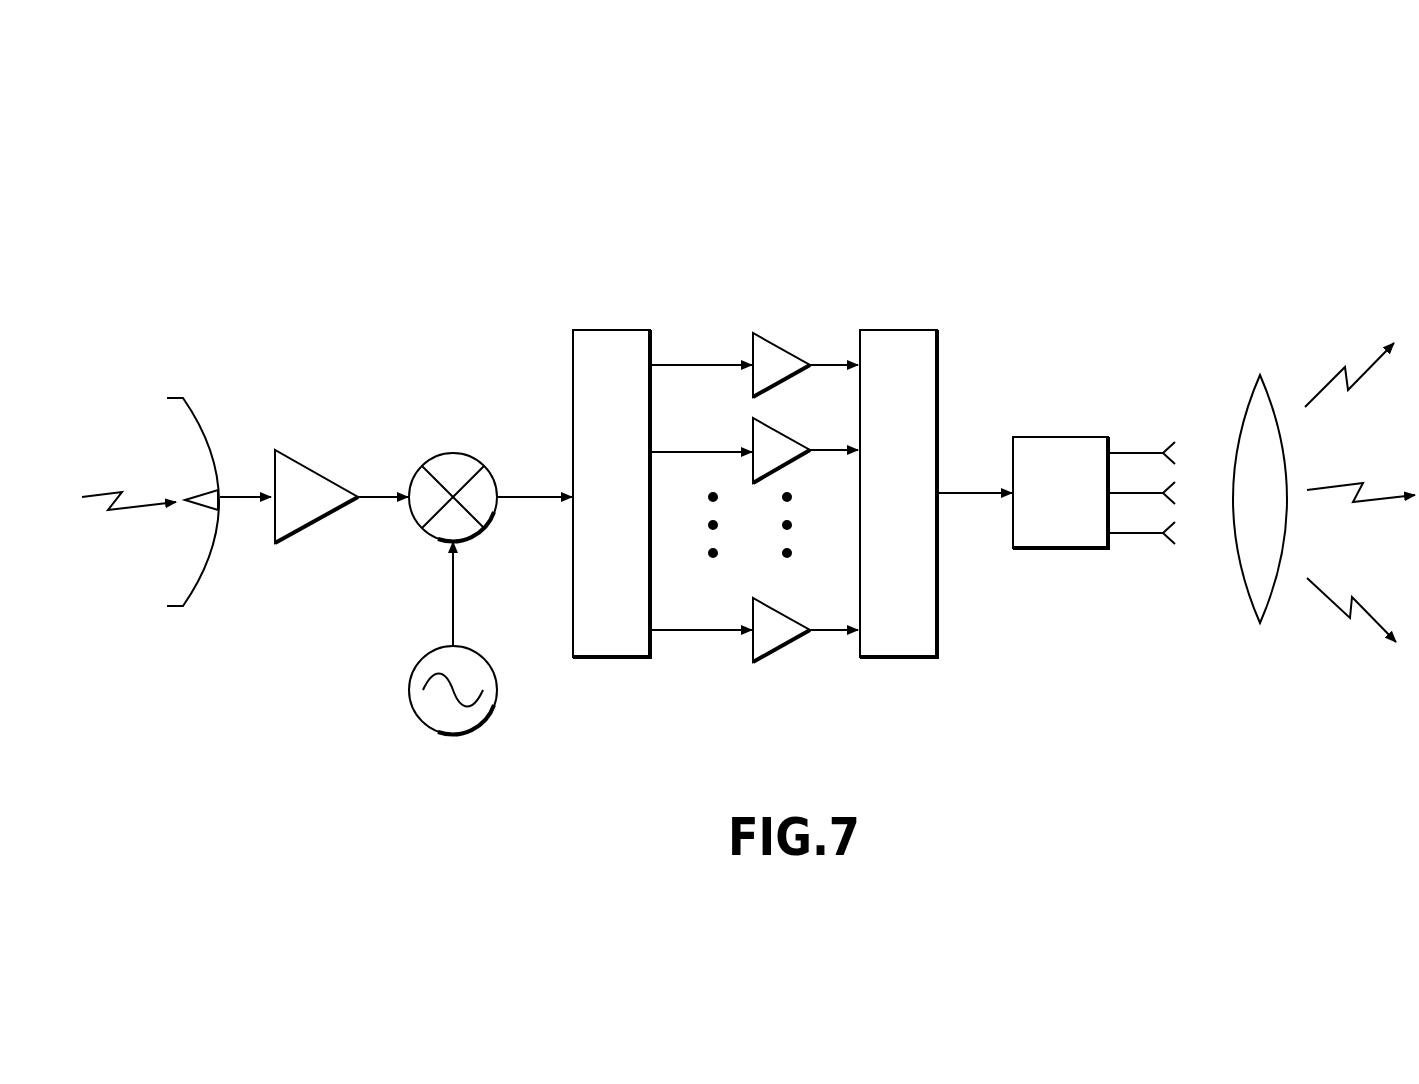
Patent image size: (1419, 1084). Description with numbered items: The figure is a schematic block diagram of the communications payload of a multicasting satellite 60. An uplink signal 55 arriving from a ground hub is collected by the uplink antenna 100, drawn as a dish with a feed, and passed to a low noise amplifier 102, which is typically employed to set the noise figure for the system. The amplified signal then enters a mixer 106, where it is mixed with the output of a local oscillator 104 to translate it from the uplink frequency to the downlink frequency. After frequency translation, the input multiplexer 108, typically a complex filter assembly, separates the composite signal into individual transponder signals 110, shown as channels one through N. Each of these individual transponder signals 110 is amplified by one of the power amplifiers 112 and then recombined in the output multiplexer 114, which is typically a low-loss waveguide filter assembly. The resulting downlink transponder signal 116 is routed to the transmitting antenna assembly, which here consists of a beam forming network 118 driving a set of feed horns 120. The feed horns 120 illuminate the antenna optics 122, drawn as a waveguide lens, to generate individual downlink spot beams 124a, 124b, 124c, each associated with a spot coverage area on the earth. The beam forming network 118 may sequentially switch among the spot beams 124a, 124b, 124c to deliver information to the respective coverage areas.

The multicasting satellite 60 is at (310, 247).
The uplink signal 55 is at (97, 492).
The uplink antenna 100 is at (173, 396).
The low noise amplifier 102 is at (295, 458).
The local oscillator 104 is at (472, 648).
The mixer 106 is at (470, 455).
The input multiplexer 108 is at (613, 330).
The individual transponder signals 110 is at (672, 363).
The power amplifiers 112 is at (777, 342).
The output multiplexer 114 is at (900, 330).
The downlink transponder signal 116 is at (960, 490).
The beam forming network 118 is at (1073, 433).
The feed horns 120 is at (1172, 447).
The antenna optics 122 is at (1267, 382).
The downlink spot beam 124a is at (1372, 362).
The downlink spot beam 124b is at (1400, 495).
The downlink spot beam 124c is at (1385, 630).